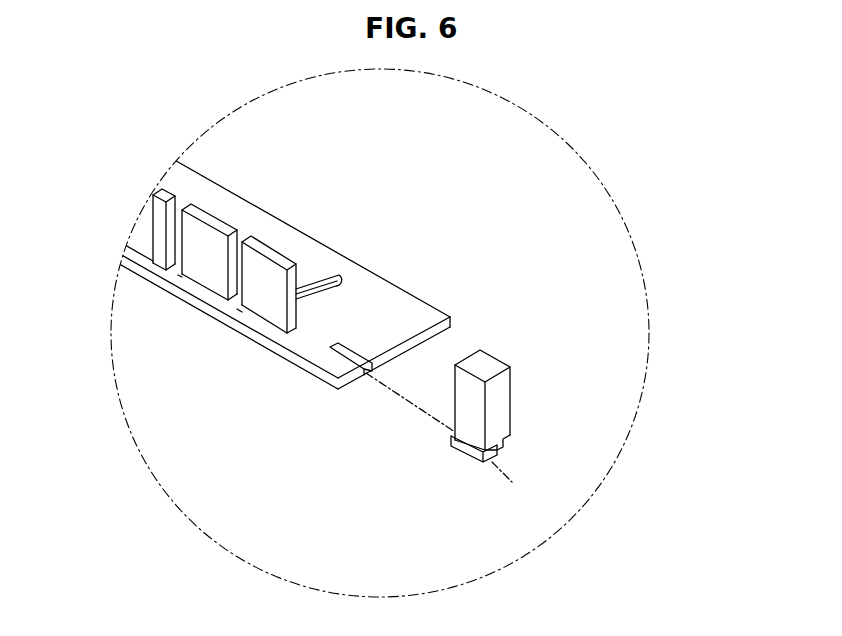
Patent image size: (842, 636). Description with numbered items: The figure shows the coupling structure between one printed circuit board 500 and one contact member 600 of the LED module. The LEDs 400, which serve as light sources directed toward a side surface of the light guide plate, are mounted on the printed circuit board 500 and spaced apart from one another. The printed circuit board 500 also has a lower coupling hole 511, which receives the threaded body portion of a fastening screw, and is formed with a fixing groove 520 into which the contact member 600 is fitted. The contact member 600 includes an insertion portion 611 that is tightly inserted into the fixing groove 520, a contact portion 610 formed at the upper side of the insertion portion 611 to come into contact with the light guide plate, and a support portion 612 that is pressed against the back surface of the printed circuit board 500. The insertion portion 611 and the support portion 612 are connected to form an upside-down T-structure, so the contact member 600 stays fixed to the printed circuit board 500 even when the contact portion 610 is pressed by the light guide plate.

The LEDs 400 is at (197, 253).
The printed circuit board 500 is at (296, 205).
The lower coupling hole 511 is at (333, 275).
The fixing groove 520 is at (356, 350).
The contact member 600 is at (638, 444).
The contact portion 610 is at (498, 390).
The insertion portion 611 is at (505, 441).
The support portion 612 is at (497, 468).